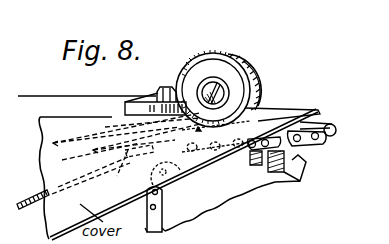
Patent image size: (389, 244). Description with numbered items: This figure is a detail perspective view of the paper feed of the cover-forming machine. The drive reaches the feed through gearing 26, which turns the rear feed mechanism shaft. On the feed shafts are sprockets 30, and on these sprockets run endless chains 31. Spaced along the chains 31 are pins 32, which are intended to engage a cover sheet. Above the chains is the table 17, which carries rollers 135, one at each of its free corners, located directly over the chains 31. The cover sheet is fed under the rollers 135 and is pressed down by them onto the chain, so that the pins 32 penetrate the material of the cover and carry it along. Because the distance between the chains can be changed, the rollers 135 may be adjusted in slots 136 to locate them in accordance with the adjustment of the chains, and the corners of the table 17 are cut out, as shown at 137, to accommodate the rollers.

The table 17 is at (84, 167).
The gearing 26 is at (233, 203).
The sprockets 30 is at (235, 191).
The endless chains 31 is at (320, 118).
The pins 32 is at (258, 120).
The rollers 135 is at (230, 93).
The slots 136 is at (74, 133).
The cut out 137 is at (127, 170).